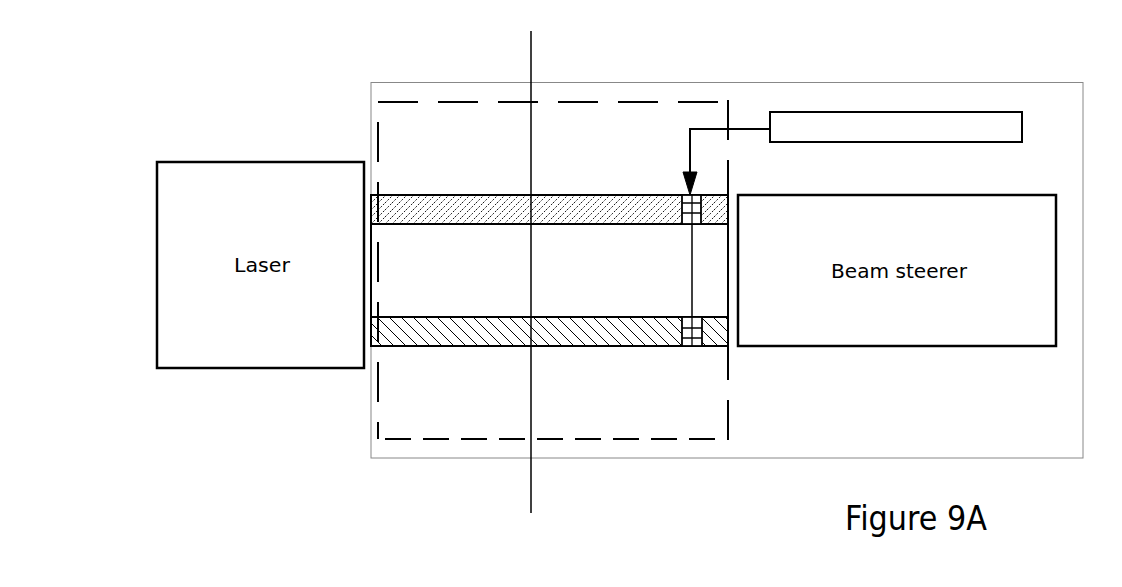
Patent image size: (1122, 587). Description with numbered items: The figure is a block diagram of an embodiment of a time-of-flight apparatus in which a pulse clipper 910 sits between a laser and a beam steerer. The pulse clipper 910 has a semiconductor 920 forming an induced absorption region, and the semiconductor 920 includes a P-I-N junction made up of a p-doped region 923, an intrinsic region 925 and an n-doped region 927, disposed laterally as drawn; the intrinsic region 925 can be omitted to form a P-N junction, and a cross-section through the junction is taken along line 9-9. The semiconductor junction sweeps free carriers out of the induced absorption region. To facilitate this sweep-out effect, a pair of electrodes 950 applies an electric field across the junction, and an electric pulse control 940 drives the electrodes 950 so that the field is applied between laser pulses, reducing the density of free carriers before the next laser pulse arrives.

The section line 9- 9 is at (531, 31).
The pulse clipper 910 is at (652, 439).
The semiconductor 920 is at (580, 346).
The p-doped region 923 is at (623, 208).
The intrinsic region 925 is at (456, 298).
The n-doped region 927 is at (488, 330).
The electric pulse control 940 is at (905, 111).
The electrodes 950 is at (697, 347).